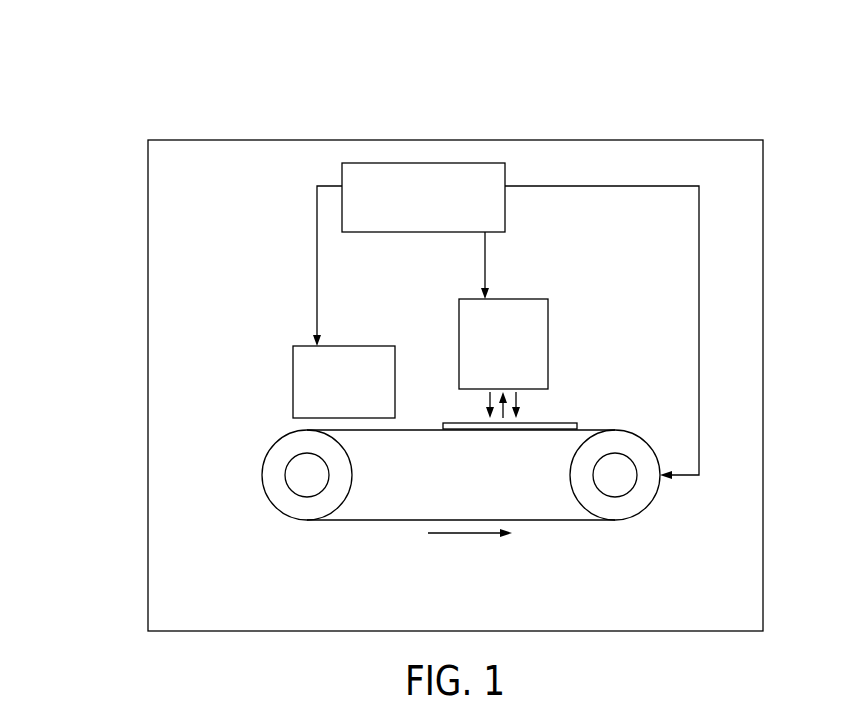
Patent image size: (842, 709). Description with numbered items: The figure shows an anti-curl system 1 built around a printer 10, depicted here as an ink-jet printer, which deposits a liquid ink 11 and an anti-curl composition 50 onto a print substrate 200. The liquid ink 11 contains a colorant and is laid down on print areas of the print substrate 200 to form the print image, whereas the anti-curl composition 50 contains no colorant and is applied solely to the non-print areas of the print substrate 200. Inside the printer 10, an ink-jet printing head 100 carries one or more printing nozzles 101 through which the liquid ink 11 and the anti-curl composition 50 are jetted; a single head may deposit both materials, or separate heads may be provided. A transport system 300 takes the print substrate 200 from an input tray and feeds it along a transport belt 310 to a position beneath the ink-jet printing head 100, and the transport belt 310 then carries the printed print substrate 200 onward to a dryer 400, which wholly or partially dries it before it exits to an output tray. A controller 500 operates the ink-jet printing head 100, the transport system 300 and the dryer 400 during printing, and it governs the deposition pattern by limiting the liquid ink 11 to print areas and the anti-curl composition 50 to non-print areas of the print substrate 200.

The anti-curl system 1 is at (100, 114).
The printer 10 is at (148, 176).
The liquid ink 11 is at (489, 397).
The anti-curl composition 50 is at (519, 395).
The ink-jet printing head 100 is at (548, 318).
The printing nozzle 101 is at (504, 400).
The print substrate 200 is at (452, 422).
The transport system 300 is at (246, 475).
The transport belt 310 is at (352, 472).
The dryer 400 is at (293, 352).
The controller 500 is at (505, 208).